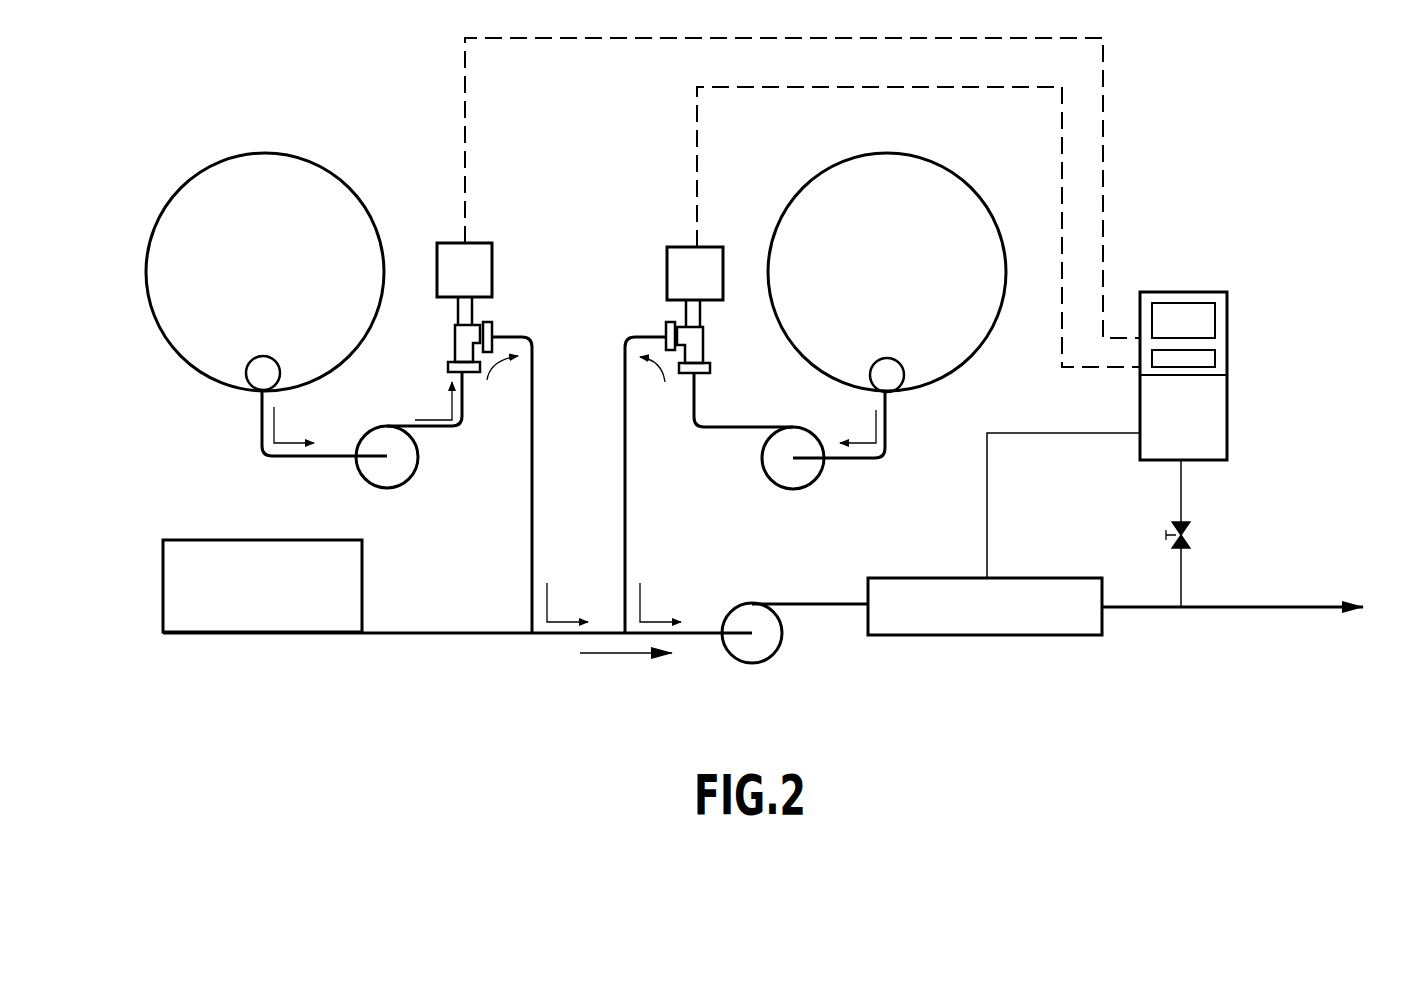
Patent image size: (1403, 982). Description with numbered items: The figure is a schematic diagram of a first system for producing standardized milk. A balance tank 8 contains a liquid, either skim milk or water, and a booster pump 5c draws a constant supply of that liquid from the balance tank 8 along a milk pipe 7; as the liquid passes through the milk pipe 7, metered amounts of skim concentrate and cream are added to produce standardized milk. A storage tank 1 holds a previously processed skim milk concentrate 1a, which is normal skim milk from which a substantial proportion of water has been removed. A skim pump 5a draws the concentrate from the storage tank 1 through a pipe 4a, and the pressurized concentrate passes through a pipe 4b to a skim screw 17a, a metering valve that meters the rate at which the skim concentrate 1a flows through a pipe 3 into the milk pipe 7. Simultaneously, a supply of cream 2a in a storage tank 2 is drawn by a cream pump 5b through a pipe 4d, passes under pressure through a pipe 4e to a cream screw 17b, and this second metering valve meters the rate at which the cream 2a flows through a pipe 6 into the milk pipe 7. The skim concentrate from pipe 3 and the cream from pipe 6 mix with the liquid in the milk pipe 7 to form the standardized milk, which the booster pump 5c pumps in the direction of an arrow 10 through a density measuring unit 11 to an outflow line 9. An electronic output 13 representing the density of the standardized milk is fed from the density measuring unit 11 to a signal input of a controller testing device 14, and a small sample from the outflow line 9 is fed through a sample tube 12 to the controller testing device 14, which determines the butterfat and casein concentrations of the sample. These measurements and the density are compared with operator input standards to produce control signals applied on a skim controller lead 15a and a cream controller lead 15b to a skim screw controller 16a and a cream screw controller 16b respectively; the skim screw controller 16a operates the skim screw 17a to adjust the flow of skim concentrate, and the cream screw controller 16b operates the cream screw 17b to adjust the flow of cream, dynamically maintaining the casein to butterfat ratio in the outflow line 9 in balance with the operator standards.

The storage tank 1 is at (168, 200).
The skim milk concentrate 1a is at (285, 227).
The storage tank 2 is at (795, 205).
The cream 2a is at (910, 227).
The pipe 3 is at (530, 532).
The pipe 4a is at (262, 432).
The pipe 4b is at (440, 428).
The pipe 4d is at (888, 435).
The pipe 4e is at (697, 415).
The skim pump 5a is at (373, 487).
The cream pump 5b is at (803, 487).
The booster pump 5c is at (760, 663).
The pipe 6 is at (625, 532).
The milk pipe 7 is at (453, 633).
The balance tank 8 is at (238, 633).
The outflow line 9 is at (1345, 612).
The arrow 10 is at (612, 655).
The density measuring unit 11 is at (975, 636).
The sample tube 12 is at (1192, 542).
The electronic output 13 is at (988, 540).
The controller testing device 14 is at (1228, 420).
The skim controller lead 15a is at (1105, 160).
The cream controller lead 15b is at (1060, 160).
The skim screw controller 16a is at (480, 243).
The cream screw controller 16b is at (684, 247).
The skim screw 17a is at (495, 332).
The cream screw 17b is at (660, 332).